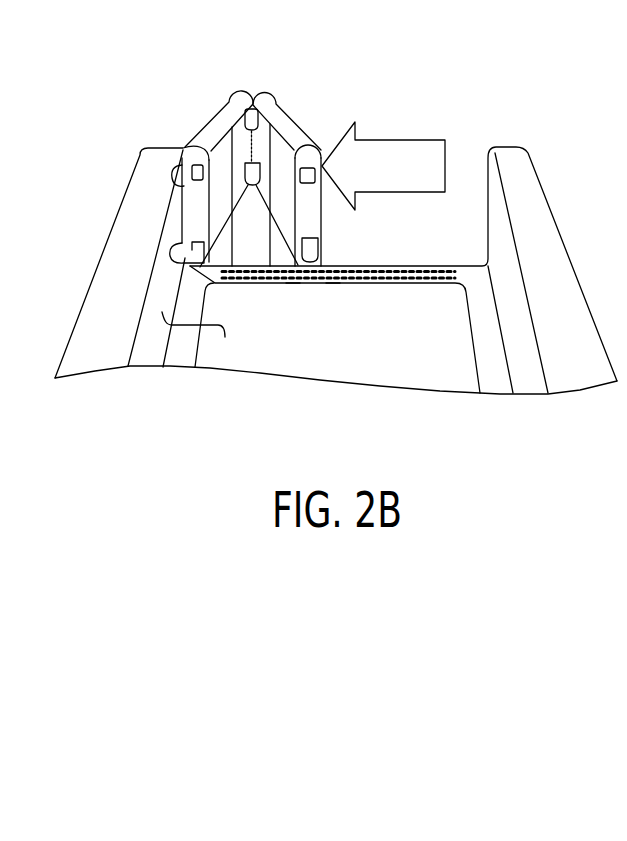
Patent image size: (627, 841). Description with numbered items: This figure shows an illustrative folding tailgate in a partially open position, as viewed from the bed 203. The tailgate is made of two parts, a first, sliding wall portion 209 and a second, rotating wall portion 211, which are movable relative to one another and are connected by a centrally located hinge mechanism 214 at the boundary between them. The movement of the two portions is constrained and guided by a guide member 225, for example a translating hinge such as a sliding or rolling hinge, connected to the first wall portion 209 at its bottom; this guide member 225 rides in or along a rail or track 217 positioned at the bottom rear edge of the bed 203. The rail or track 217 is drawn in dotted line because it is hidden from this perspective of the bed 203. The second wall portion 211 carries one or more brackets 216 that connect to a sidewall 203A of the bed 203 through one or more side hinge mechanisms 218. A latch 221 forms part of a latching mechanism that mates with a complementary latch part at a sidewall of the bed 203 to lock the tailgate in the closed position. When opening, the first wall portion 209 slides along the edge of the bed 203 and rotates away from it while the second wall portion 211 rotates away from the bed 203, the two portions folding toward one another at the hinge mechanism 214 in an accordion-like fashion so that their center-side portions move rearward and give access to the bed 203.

The bed 203 is at (415, 300).
The sidewall 203A is at (202, 313).
The first wall portion 209 is at (297, 101).
The second wall portion 211 is at (214, 98).
The hinge mechanism 214 is at (256, 102).
The bracket 216 is at (188, 163).
The rail or track 217 is at (332, 288).
The side hinge mechanism 218 is at (173, 180).
The latch 221 is at (312, 162).
The guide member 225 is at (295, 284).